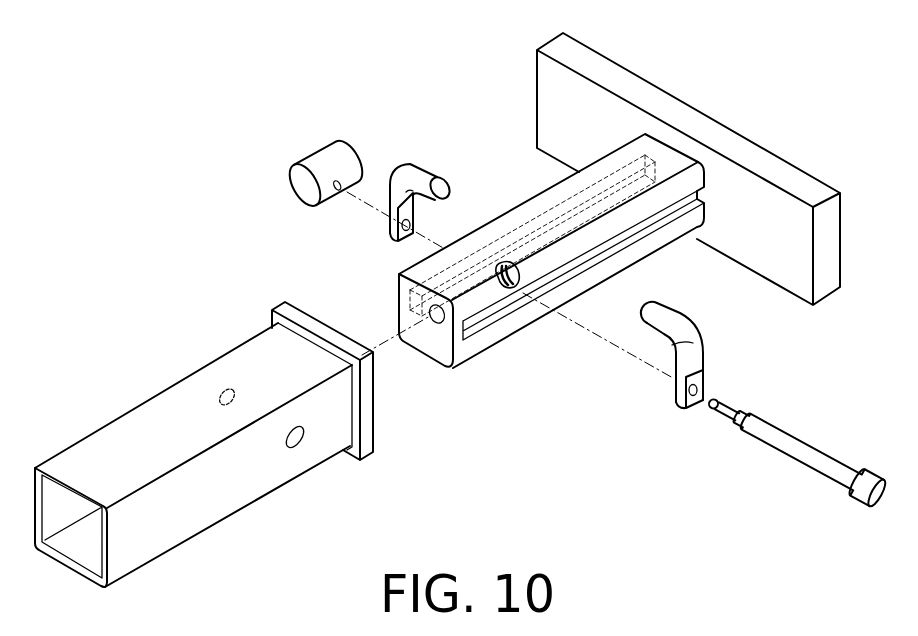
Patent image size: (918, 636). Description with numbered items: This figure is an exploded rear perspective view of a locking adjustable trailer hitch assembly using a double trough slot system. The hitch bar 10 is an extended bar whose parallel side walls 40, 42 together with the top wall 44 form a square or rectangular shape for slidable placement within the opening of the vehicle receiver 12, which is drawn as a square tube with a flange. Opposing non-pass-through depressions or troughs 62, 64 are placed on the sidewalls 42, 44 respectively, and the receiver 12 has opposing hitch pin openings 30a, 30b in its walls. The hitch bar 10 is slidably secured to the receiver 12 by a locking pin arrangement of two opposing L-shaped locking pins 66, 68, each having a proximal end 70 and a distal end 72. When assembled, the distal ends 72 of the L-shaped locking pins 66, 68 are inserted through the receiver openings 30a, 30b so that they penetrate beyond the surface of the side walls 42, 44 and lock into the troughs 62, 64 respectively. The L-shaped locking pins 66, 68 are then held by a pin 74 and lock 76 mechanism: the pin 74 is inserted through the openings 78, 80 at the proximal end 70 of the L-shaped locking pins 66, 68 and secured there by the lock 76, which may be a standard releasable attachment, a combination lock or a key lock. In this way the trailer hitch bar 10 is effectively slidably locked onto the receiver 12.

The hitch bar 10 is at (613, 150).
The receiver 12 is at (110, 422).
The hitch pin opening 30a is at (222, 396).
The hitch pin opening 30b is at (300, 445).
The side wall 40 is at (490, 222).
The side wall 42 is at (460, 360).
The top wall 44 is at (680, 160).
The trough 62 is at (542, 218).
The trough 64 is at (490, 323).
The L-shaped locking pin 66 is at (407, 163).
The L-shaped locking pin 68 is at (690, 320).
The proximal end 70 is at (391, 239).
The distal end 72 is at (440, 177).
The pin 74 is at (800, 462).
The lock 76 is at (330, 146).
The opening 78 is at (698, 404).
The opening 80 is at (407, 240).